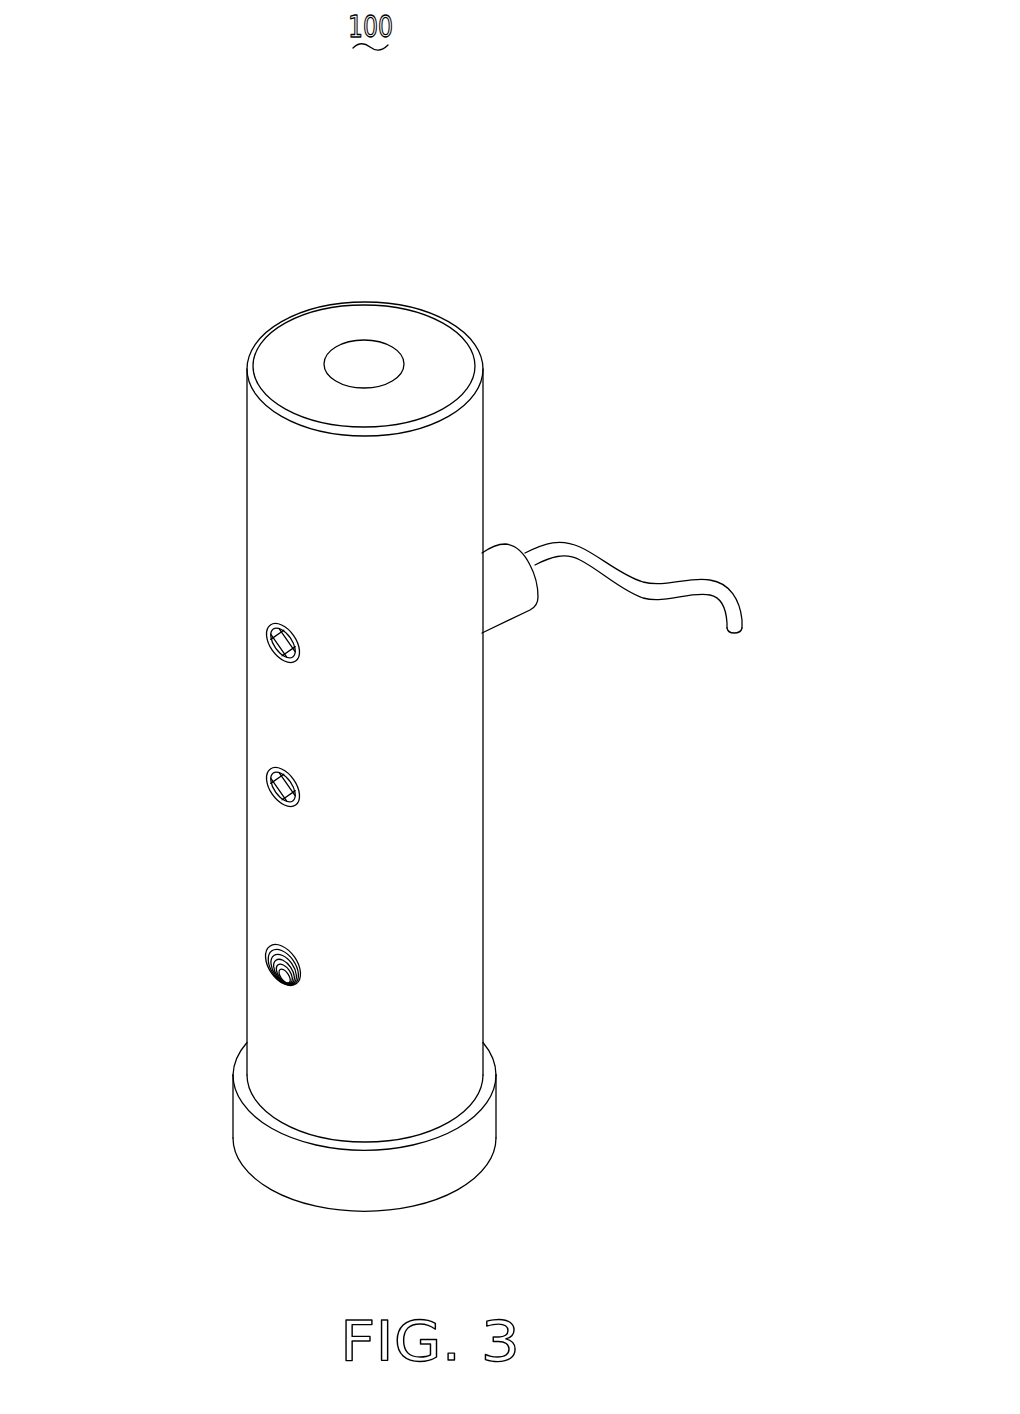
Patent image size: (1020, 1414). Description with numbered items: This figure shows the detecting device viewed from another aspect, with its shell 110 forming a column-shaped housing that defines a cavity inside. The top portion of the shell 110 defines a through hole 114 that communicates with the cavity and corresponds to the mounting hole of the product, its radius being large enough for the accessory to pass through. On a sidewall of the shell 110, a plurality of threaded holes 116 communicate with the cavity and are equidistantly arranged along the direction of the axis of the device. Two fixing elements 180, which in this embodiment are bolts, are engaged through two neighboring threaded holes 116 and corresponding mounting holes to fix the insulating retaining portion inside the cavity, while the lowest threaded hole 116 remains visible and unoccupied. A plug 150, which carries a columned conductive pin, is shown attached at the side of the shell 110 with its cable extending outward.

The shell 110 is at (425, 850).
The through hole 114 is at (361, 355).
The threaded holes 116 is at (270, 955).
The plug 150 is at (503, 570).
The fixing elements 180 is at (290, 645).